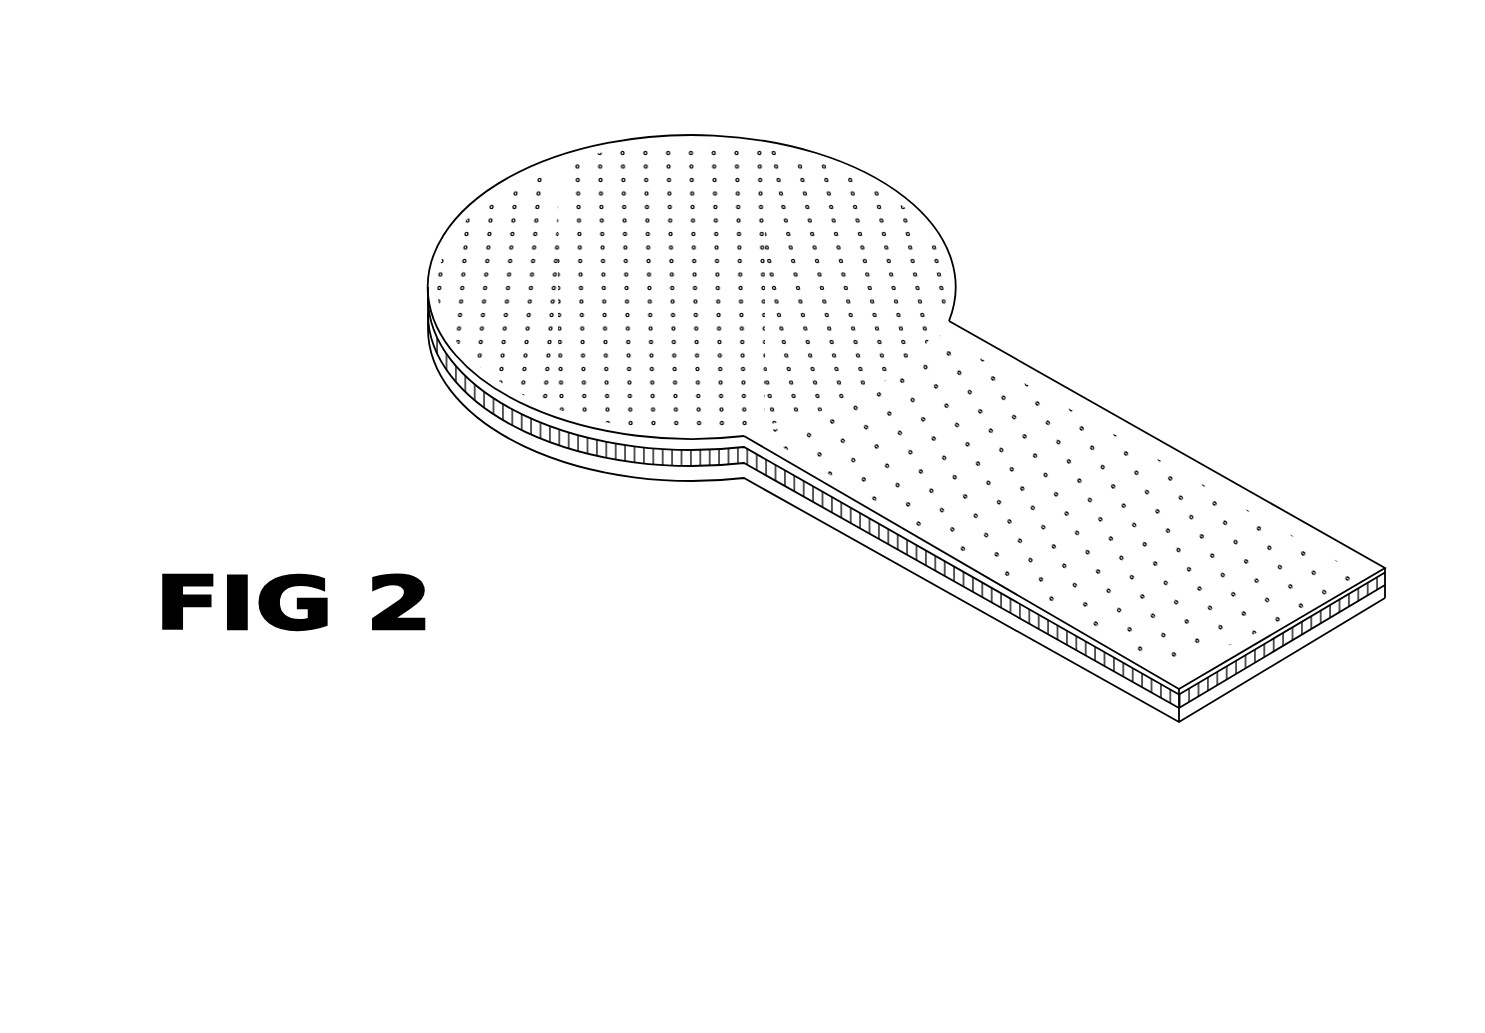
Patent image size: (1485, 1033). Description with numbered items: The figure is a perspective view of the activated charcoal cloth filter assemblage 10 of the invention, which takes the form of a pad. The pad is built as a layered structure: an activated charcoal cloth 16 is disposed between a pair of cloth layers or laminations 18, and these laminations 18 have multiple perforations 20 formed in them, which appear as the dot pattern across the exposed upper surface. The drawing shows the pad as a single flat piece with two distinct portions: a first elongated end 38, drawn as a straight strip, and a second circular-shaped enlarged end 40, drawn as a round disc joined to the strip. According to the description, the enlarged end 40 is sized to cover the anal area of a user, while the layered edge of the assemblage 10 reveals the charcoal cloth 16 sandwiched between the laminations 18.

The activated charcoal cloth filter assemblage 10 is at (940, 401).
The activated charcoal cloth 16 is at (1302, 640).
The cloth layers or laminations 18 is at (1030, 362).
The perforations 20 is at (1291, 531).
The first elongated end 38 is at (1162, 664).
The second circular-shaped enlarged end 40 is at (773, 143).